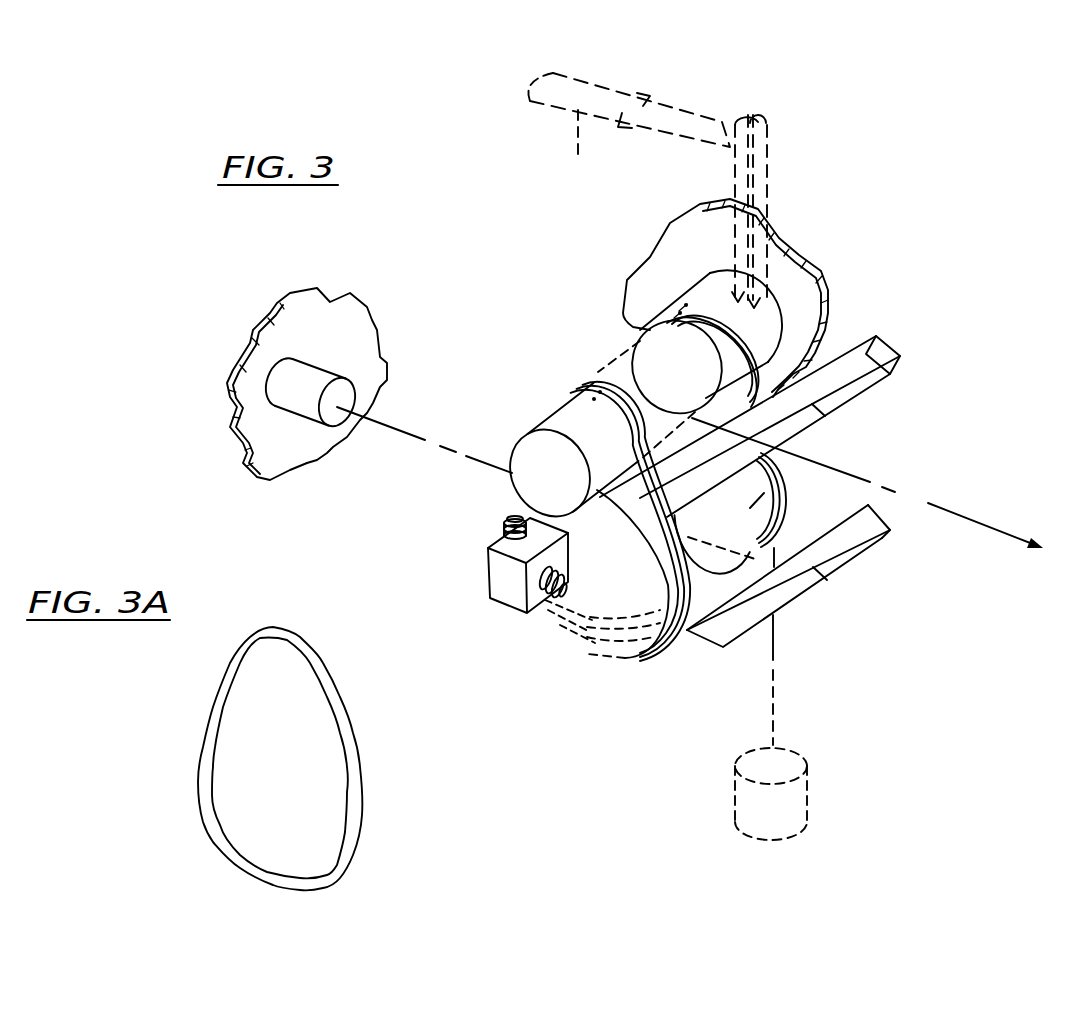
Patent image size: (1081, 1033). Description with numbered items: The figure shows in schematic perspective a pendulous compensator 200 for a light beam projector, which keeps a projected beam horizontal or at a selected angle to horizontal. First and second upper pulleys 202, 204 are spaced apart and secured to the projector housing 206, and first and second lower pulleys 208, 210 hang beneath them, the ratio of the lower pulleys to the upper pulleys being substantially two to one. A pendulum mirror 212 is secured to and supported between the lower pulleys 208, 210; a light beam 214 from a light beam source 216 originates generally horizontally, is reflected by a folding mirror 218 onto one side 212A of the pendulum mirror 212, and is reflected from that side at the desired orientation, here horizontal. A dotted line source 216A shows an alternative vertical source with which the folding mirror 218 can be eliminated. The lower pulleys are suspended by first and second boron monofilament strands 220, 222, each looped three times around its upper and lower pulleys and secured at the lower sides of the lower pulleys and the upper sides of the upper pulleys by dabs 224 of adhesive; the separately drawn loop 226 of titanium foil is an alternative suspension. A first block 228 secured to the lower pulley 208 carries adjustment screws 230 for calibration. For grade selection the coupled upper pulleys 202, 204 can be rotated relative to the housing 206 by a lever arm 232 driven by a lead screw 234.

In FIG. 3, the pendulous compensator 200 is at (926, 264).
In FIG. 3, the first upper pulley 202 is at (528, 430).
In FIG. 3, the second upper pulley 204 is at (800, 312).
In FIG. 3, the housing 206 is at (310, 290).
In FIG. 3, the first lower pulley 208 is at (590, 594).
In FIG. 3, the second lower pulley 210 is at (788, 462).
In FIG. 3, the pendulum mirror 212 is at (878, 346).
In FIG. 3, the one side of the pendulum mirror 212A is at (886, 364).
In FIG. 3, the light beam 214 is at (387, 430).
In FIG. 3, the light beam source 216 is at (315, 420).
In FIG. 3, the dotted line source 216A is at (808, 780).
In FIG. 3, the folding mirror 218 is at (837, 577).
In FIG. 3, the first boron monofilament strand 220 is at (632, 405).
In FIG. 3, the second boron monofilament strand 222 is at (720, 316).
In FIG. 3, the dabs of adhesive 224 is at (565, 380).
In FIG. 3A, the loop 226 is at (355, 805).
In FIG. 3, the first block 228 is at (503, 607).
In FIG. 3, the adjustment screws 230 is at (545, 587).
In FIG. 3, the lever arm 232 is at (772, 122).
In FIG. 3, the lead screw 234 is at (578, 160).